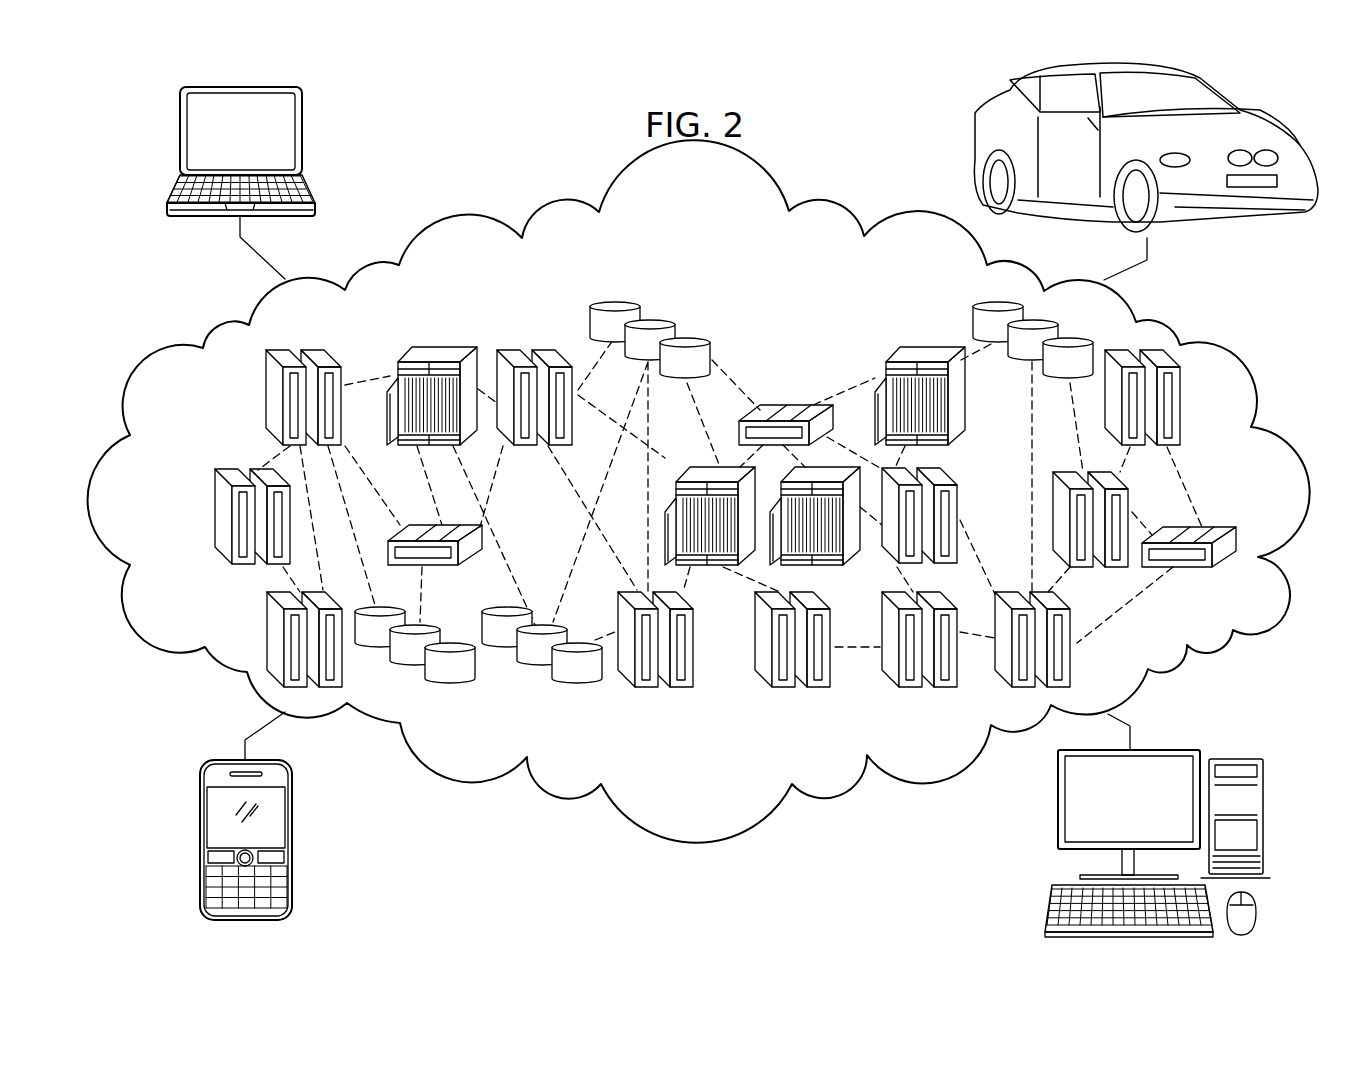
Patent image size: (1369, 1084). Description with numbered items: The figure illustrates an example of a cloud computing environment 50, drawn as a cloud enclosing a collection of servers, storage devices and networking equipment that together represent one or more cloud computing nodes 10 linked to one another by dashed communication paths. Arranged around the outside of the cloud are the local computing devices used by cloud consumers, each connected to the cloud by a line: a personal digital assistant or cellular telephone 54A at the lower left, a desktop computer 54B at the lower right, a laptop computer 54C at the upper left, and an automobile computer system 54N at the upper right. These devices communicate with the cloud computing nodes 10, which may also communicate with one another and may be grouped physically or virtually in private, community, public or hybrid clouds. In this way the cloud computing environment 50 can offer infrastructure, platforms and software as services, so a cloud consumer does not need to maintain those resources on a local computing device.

The cloud computing nodes 10 is at (520, 296).
The cloud computing environment 50 is at (650, 840).
The personal digital assistant (PDA) or cellular telephone 54A is at (200, 837).
The desktop computer 54B is at (1058, 800).
The laptop computer 54C is at (180, 132).
The automobile computer system 54N is at (1260, 122).